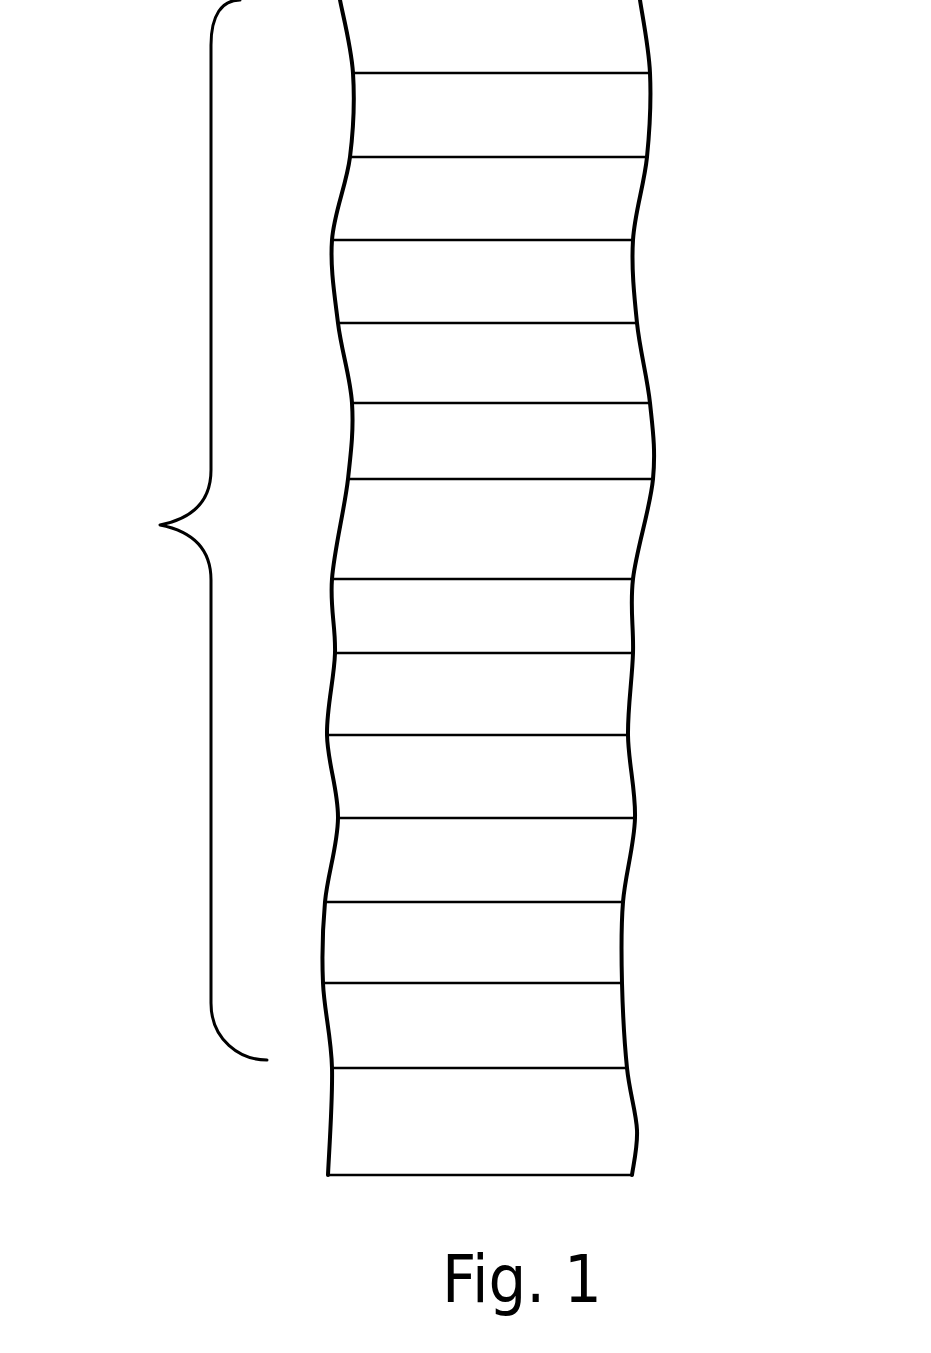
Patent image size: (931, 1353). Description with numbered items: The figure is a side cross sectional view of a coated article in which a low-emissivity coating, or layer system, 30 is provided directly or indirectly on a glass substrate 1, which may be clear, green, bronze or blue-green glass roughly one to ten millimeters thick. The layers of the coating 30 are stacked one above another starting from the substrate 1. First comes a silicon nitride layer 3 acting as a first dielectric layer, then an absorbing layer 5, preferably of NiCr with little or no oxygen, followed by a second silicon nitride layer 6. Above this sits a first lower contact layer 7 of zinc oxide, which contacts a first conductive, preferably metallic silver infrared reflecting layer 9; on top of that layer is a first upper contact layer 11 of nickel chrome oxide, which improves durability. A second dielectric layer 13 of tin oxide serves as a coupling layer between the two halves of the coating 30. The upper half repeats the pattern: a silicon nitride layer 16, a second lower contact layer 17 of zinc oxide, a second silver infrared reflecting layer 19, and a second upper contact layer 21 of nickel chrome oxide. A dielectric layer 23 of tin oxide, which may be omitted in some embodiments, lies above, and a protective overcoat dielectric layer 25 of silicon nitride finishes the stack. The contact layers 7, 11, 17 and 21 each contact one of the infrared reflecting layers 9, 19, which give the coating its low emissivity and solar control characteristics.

The substrate 1 is at (625, 1130).
The silicon nitride layer 3 is at (612, 1039).
The absorbing layer 5 is at (612, 952).
The silicon nitride layer 6 is at (622, 873).
The first lower contact layer 7 is at (618, 782).
The first infrared (IR) reflecting layer 9 is at (622, 704).
The first upper contact layer 11 is at (625, 625).
The second dielectric layer 13 is at (630, 537).
The silicon nitride layer 16 is at (647, 454).
The second lower contact layer 17 is at (632, 377).
The second infrared (IR) reflecting layer 19 is at (622, 295).
The second upper contact layer 21 is at (616, 212).
The dielectric layer 23 is at (640, 122).
The protective overcoat dielectric layer 25 is at (638, 38).
The coating 30 is at (198, 409).